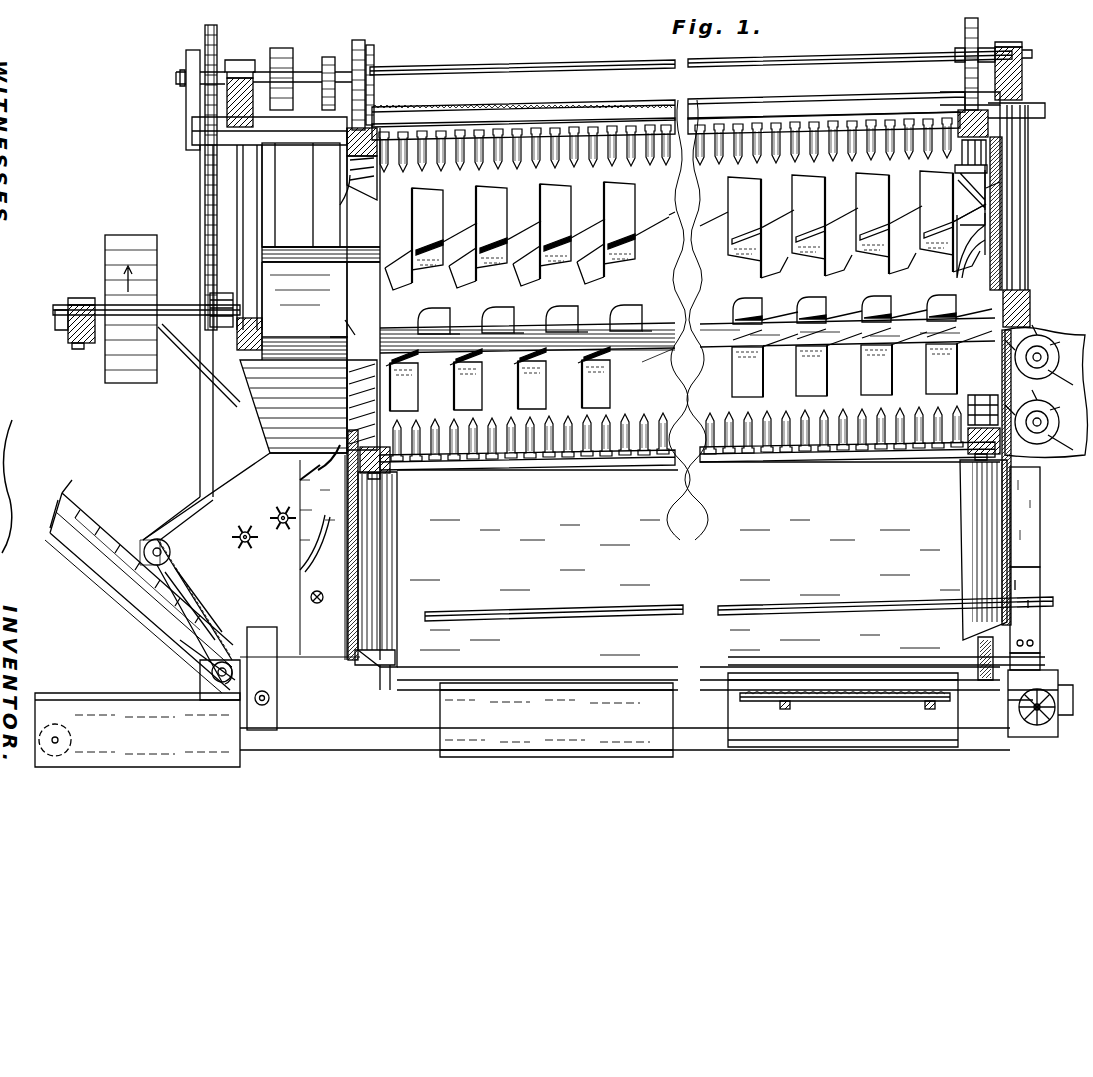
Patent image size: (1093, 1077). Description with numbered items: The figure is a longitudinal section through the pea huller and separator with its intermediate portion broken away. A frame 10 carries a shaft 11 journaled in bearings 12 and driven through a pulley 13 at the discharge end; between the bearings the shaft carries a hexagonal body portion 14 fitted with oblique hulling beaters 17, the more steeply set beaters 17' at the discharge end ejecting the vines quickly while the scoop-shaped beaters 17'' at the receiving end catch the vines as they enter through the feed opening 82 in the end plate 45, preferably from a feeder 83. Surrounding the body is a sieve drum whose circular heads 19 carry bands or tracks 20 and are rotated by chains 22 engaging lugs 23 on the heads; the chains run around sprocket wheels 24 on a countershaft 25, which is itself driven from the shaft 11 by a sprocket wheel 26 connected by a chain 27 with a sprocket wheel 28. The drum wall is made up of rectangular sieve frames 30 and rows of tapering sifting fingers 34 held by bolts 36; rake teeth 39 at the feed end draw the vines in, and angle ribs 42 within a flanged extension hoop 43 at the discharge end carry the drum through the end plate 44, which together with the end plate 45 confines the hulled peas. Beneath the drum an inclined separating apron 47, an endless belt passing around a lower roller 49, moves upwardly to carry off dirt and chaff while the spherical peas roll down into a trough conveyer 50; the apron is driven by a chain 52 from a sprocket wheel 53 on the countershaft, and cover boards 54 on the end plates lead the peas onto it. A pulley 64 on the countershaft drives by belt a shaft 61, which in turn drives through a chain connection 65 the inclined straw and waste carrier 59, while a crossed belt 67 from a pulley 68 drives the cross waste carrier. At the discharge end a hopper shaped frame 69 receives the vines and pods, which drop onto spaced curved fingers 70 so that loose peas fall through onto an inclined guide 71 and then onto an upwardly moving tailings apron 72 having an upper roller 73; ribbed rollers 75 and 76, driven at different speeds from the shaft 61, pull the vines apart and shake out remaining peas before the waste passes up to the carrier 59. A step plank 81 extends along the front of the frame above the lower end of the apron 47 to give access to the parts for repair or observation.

The frame column 10 is at (277, 716).
The shaft 11 is at (120, 305).
The bearings 12 is at (80, 305).
The pulley 13 is at (122, 236).
The body portion 14 is at (288, 252).
The hulling beaters 17 is at (687, 350).
The hulling beaters at discharge end 17' is at (321, 257).
The hulling beaters at receiving end 17'' is at (982, 263).
The heads 19 is at (347, 128).
The metal bands or tracks 20 is at (362, 480).
The chains 22 is at (372, 112).
The lugs or sprocket teeth 23 is at (378, 480).
The sprocket wheels 24 is at (374, 58).
The countershaft 25 is at (452, 70).
The sprocket wheel 26 is at (217, 34).
The chain 27 is at (205, 206).
The sprocket wheel 28 is at (215, 300).
The sieve frames 30 is at (512, 467).
The sifting fingers 34 is at (545, 178).
The bolts 36 is at (522, 128).
The rake teeth 39 is at (975, 190).
The angle ribs or vanes 42 is at (347, 410).
The flanged extension hoop 43 is at (347, 444).
The end plate 44 is at (262, 188).
The end plate 45 is at (1040, 504).
The separating apron 47 is at (698, 576).
The roller 49 is at (385, 690).
The trough conveyer 50 is at (875, 695).
The chain 52 is at (325, 83).
The sprocket wheel 53 is at (360, 42).
The cover boards 54 is at (397, 544).
The inclined conveyer or stacker 59 is at (105, 540).
The shaft 61 is at (320, 593).
The pulley 64 is at (293, 52).
The chain connection 65 is at (240, 648).
The crossed belt 67 is at (200, 427).
The pulley 68 is at (186, 58).
The hopper shaped frame 69 is at (232, 478).
The curved fingers 70 is at (312, 500).
The inclined guide 71 is at (312, 540).
The separating apron for tailings 72 is at (280, 550).
The upper roller 73 is at (155, 540).
The ribbed roller 75 is at (282, 512).
The ribbed roller 76 is at (245, 530).
The step plank 81 is at (588, 610).
The feed opening 82 is at (1025, 410).
The feeder 83 is at (1050, 370).